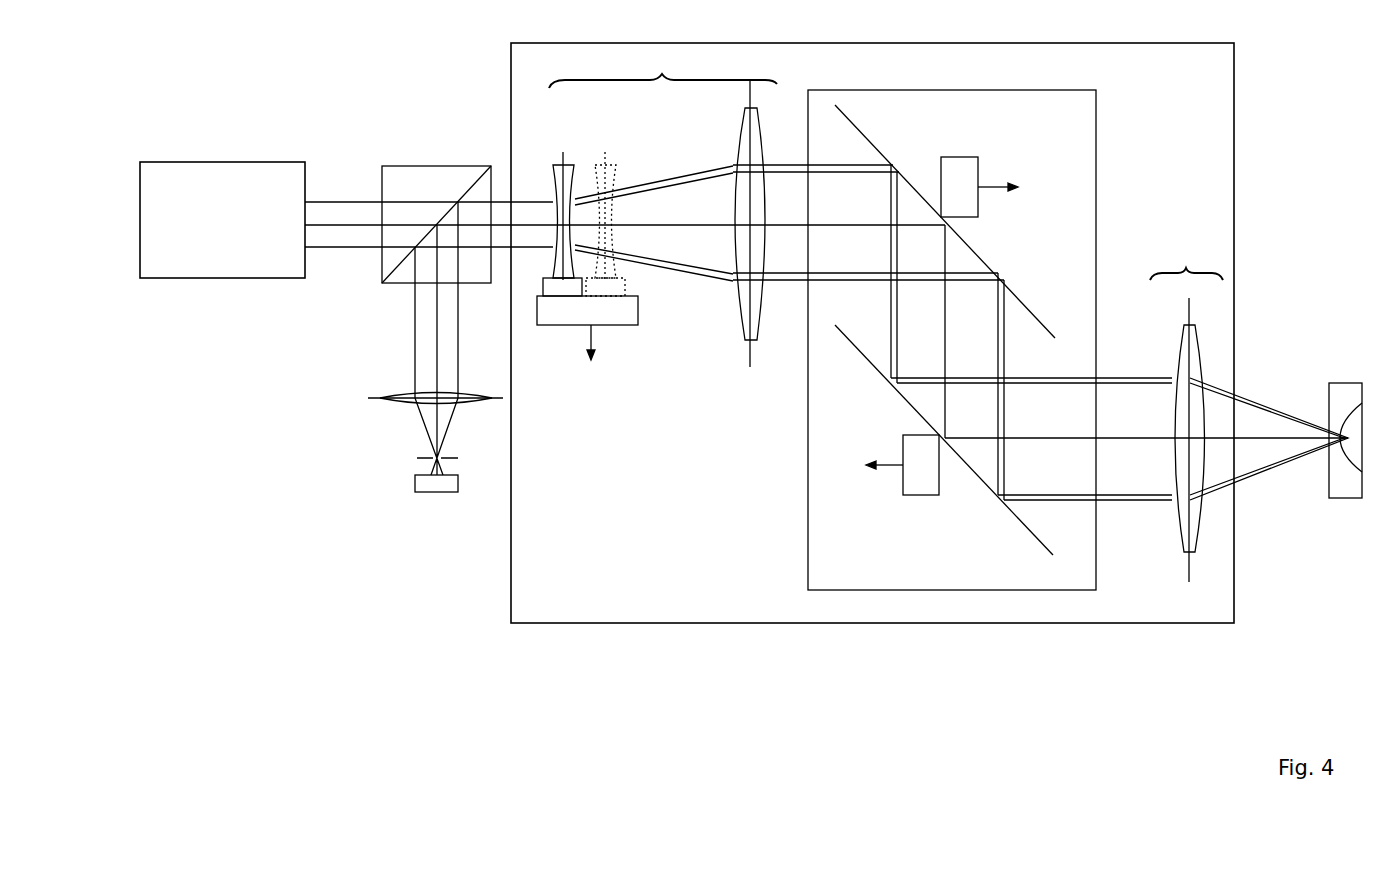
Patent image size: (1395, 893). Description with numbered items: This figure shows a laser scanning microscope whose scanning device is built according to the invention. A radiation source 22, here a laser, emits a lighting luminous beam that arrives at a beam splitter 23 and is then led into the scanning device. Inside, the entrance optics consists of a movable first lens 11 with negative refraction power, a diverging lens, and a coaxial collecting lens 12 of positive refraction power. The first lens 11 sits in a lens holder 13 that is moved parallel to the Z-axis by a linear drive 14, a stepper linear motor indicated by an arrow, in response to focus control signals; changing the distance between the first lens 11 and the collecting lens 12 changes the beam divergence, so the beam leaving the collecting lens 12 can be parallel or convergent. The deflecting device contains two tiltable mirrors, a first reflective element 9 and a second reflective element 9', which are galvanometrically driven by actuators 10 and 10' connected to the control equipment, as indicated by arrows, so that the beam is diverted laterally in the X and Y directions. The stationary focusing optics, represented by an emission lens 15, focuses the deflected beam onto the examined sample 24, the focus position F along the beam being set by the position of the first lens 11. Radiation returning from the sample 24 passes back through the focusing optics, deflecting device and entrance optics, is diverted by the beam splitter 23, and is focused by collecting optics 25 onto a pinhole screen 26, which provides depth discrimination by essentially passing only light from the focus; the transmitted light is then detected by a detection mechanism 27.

The radiation source 22 is at (230, 266).
The beam splitter 23 is at (428, 166).
The collecting optics 25 is at (400, 406).
The pinhole screen 26 is at (418, 462).
The detection mechanism 27 is at (430, 492).
The first lens 11 is at (556, 165).
The lens holder 13 is at (542, 292).
The linear drive 14 is at (582, 318).
The collecting lens 12 is at (742, 308).
The first reflective element 9 is at (953, 302).
The actuator 10 is at (982, 159).
The second reflective element 9' is at (1091, 445).
The actuator 10' is at (899, 505).
The emission lens 15 is at (1200, 333).
The sample 24 is at (1342, 383).
The focus position F is at (1343, 498).